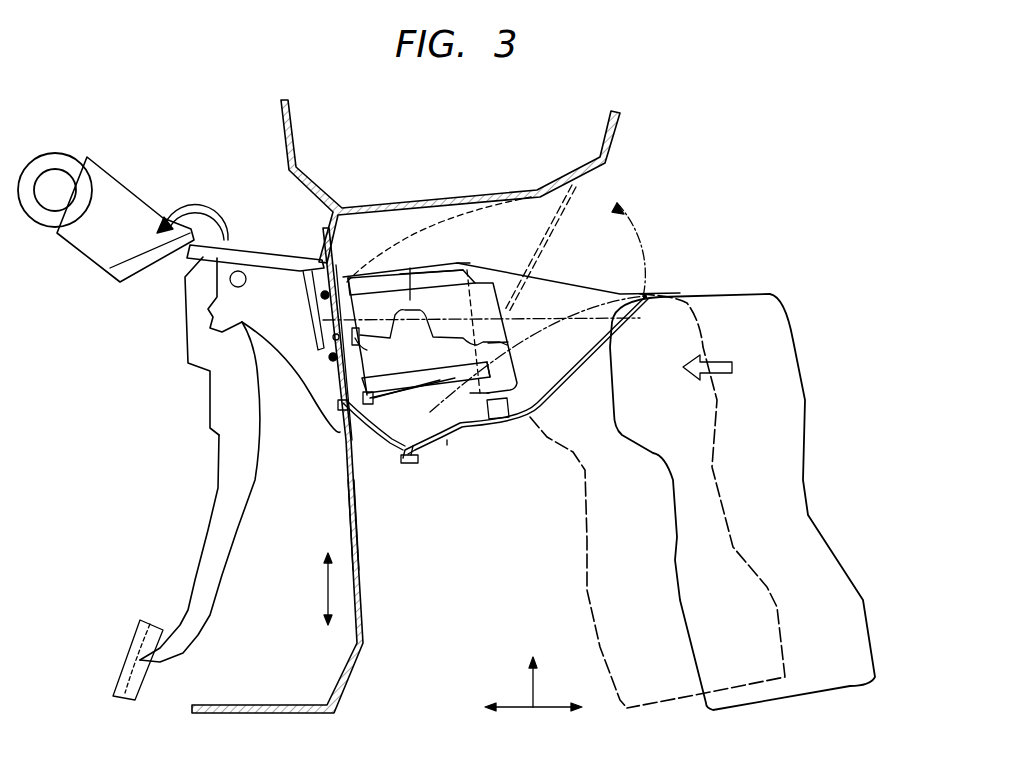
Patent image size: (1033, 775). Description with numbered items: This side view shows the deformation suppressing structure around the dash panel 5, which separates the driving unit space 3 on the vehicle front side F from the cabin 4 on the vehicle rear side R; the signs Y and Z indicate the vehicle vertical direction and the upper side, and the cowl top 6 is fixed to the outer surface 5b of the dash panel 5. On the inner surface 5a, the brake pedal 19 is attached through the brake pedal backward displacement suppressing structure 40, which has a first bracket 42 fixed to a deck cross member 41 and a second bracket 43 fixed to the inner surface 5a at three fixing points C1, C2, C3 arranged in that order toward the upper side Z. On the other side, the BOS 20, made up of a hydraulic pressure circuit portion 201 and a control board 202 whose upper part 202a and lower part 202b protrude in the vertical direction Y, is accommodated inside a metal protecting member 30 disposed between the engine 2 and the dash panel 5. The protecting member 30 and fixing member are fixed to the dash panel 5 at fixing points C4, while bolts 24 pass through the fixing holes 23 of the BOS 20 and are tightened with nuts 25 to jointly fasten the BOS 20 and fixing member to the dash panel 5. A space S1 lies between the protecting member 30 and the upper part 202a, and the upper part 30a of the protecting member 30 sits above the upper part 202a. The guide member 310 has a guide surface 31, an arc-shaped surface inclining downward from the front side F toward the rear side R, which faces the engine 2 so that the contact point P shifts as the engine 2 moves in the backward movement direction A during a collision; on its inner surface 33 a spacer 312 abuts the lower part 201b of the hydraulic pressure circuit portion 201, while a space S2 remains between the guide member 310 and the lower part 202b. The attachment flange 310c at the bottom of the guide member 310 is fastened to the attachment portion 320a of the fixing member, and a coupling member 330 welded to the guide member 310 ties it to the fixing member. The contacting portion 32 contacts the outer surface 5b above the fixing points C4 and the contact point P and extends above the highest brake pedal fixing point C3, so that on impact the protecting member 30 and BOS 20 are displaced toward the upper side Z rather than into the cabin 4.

The engine 2 is at (768, 297).
The driving unit space 3 is at (563, 562).
The cabin 4 is at (245, 659).
The dash panel 5 is at (372, 601).
The inner surface 5a is at (350, 516).
The outer surface 5b is at (360, 545).
The cowl top 6 is at (391, 210).
The brake pedal 19 is at (222, 490).
The BOS 20 is at (524, 311).
The fixing holes 23 is at (367, 383).
The bolts 24 is at (362, 348).
The nuts 25 is at (318, 341).
The protecting member 30 is at (574, 277).
The upper part 30a is at (456, 261).
The guide surface 31 is at (574, 374).
The contacting portion 32 is at (345, 272).
The inner surface 33 is at (609, 292).
The brake pedal backward displacement suppressing structure 40 is at (256, 232).
The deck cross member 41 is at (52, 153).
The first bracket 42 is at (122, 190).
The second bracket 43 is at (290, 363).
The hydraulic pressure circuit portion 201 is at (467, 382).
The lower part 201b is at (510, 395).
The control board 202 is at (437, 276).
The upper part 202a is at (455, 270).
The lower part 202b is at (484, 438).
The guide member 310 is at (543, 413).
The attachment flange 310c is at (410, 464).
The spacer 312 is at (504, 428).
The attachment portion 320a is at (413, 467).
The coupling member 330 is at (526, 287).
The fixing point C1 is at (351, 430).
The fixing point C2 is at (329, 358).
The fixing point C3 is at (321, 295).
The fixing points C4 is at (355, 330).
The space S1 is at (411, 265).
The space S2 is at (448, 444).
The contact point P is at (624, 307).
The backward movement direction A is at (707, 360).
The vertical direction Y is at (320, 589).
The upper side Z is at (533, 684).
The rear side R is at (511, 720).
The front side F is at (555, 720).